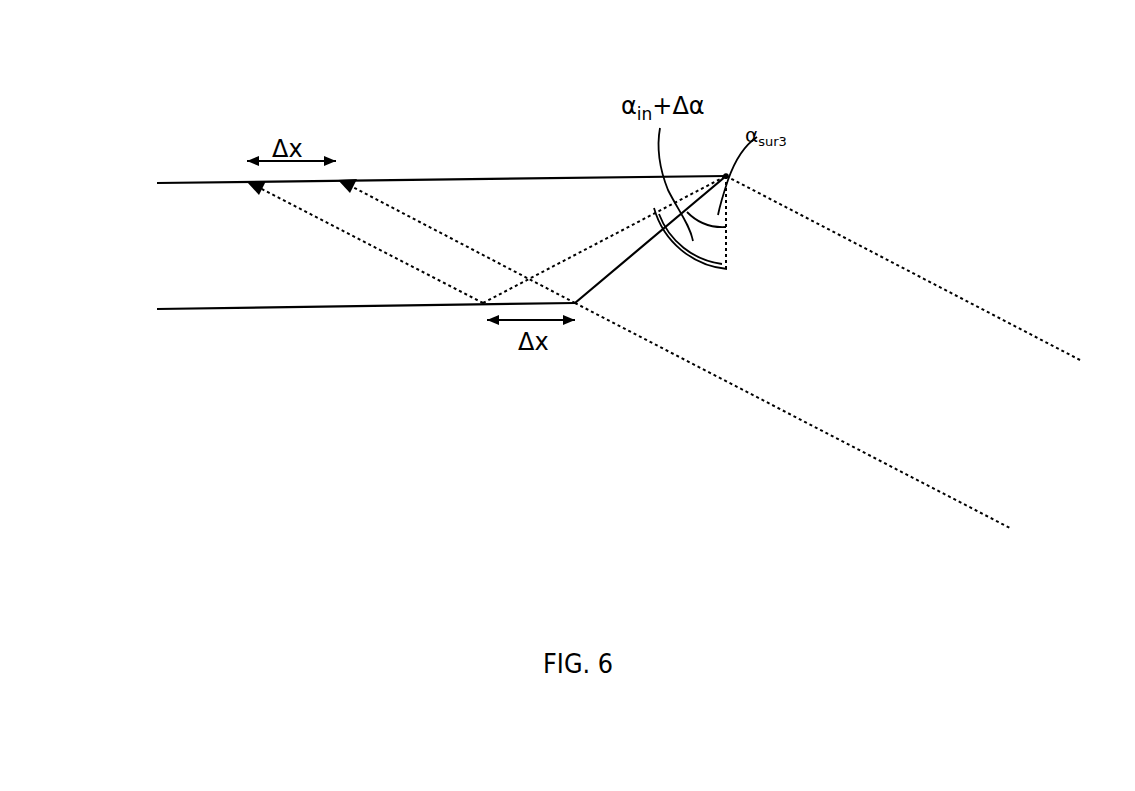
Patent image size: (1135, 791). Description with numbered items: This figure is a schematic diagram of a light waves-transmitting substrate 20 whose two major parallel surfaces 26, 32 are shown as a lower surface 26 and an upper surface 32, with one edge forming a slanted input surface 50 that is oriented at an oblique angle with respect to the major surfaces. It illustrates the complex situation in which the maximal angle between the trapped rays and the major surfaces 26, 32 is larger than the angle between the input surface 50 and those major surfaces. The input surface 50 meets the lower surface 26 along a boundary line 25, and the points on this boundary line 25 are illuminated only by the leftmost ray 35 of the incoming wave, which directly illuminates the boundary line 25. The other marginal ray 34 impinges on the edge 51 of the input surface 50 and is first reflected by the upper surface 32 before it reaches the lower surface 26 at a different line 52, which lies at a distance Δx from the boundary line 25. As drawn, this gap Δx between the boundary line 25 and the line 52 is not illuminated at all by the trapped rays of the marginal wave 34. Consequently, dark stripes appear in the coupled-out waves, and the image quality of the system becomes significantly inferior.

The light waves-transmitting substrate 20 is at (235, 237).
The boundary line 25 is at (575, 303).
The lower major surface 26 is at (380, 307).
The upper major surface 32 is at (532, 174).
The marginal ray 34 is at (1002, 318).
The leftmost ray 35 is at (728, 383).
The input surface 50 is at (603, 281).
The edge of the input surface 51 is at (727, 175).
The line on lower surface 52 is at (483, 303).